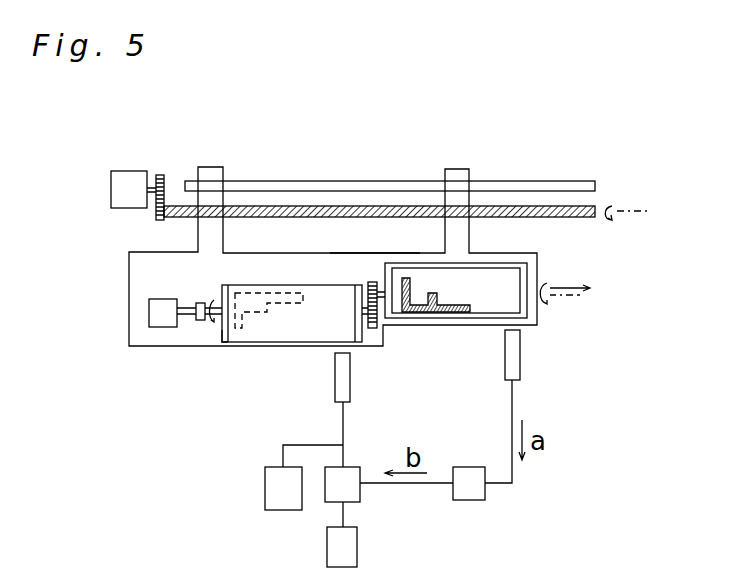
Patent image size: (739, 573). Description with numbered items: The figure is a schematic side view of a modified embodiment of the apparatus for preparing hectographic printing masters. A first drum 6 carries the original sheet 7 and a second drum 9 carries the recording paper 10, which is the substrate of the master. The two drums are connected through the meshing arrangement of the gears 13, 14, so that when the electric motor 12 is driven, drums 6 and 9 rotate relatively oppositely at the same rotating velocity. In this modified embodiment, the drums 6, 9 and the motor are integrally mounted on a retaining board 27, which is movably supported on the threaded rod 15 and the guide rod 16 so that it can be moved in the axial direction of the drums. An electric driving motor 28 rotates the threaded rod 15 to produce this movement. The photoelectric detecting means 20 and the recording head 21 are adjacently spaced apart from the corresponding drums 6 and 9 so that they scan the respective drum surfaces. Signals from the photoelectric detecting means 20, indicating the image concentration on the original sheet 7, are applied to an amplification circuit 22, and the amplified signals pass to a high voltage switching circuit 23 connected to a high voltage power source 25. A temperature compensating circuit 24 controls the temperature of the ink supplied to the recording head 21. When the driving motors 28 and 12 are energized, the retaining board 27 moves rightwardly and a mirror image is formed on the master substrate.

The first drum 6 is at (530, 273).
The original sheet 7 is at (490, 275).
The second drum 9 is at (222, 330).
The recording paper 10 is at (258, 328).
The electric motor 12 is at (152, 313).
The gear 13 is at (373, 327).
The gear 14 is at (372, 253).
The threaded rod 15 is at (580, 217).
The guide rod 16 is at (580, 182).
The photoelectric detecting means 20 is at (515, 350).
The recording head 21 is at (340, 375).
The amplification circuit 22 is at (468, 492).
The high voltage switching circuit 23 is at (360, 493).
The temperature compensating circuit 24 is at (273, 485).
The high voltage power source 25 is at (333, 547).
The retaining board 27 is at (145, 273).
The electric driving motor 28 is at (127, 178).